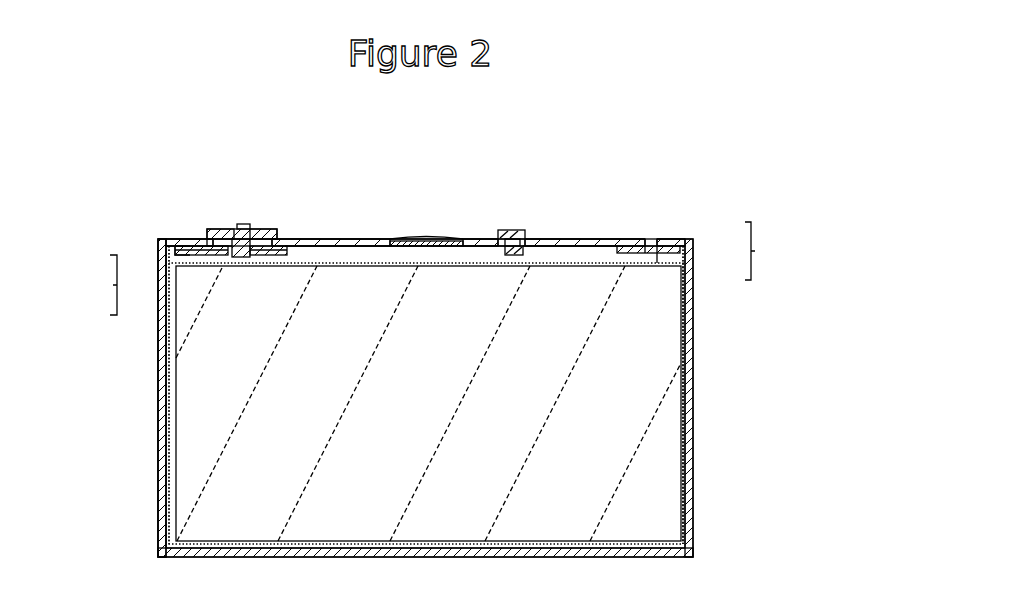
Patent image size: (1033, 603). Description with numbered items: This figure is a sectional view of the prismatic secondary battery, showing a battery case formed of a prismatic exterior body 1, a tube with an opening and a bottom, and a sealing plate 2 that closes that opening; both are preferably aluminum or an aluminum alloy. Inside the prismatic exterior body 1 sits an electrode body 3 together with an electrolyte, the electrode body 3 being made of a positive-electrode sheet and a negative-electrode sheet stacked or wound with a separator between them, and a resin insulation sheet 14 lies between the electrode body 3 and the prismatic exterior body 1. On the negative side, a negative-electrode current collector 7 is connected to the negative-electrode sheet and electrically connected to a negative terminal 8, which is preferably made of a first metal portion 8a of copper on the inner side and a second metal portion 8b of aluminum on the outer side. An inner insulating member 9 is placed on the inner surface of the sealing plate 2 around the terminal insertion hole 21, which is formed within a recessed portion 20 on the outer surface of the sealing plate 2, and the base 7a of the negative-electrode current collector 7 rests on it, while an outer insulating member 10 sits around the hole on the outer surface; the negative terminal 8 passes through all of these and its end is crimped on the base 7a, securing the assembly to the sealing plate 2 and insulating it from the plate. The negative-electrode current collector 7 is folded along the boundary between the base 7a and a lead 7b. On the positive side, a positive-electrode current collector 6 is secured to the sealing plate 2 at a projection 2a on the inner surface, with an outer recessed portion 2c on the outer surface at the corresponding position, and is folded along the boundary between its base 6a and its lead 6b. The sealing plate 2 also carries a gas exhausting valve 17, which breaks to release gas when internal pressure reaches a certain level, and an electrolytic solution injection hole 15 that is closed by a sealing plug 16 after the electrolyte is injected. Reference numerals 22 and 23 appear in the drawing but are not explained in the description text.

The prismatic exterior body 1 is at (690, 400).
The sealing plate 2 is at (350, 239).
The projection 2a is at (646, 240).
The outer recessed portion 2c is at (658, 240).
The electrode body 3 is at (648, 490).
The positive-electrode current collector 6 is at (730, 383).
The base 6a is at (690, 246).
The lead 6b is at (680, 263).
The negative-electrode current collector 7 is at (387, 395).
The base 7a is at (167, 256).
The lead 7b is at (170, 284).
The negative terminal 8 is at (287, 112).
The first metal portion 8a is at (262, 230).
The second metal portion 8b is at (230, 230).
The inner insulating member 9 is at (186, 243).
The outer insulating member 10 is at (210, 240).
The insulation sheet 14 is at (165, 412).
The electrolytic solution injection hole 15 is at (524, 244).
The sealing plug 16 is at (513, 232).
The gas exhausting valve 17 is at (427, 239).
The recessed portion 20 is at (221, 246).
The terminal insertion hole 21 is at (266, 246).
The insulating layer 22 is at (200, 247).
The current collector plate 23 is at (288, 247).